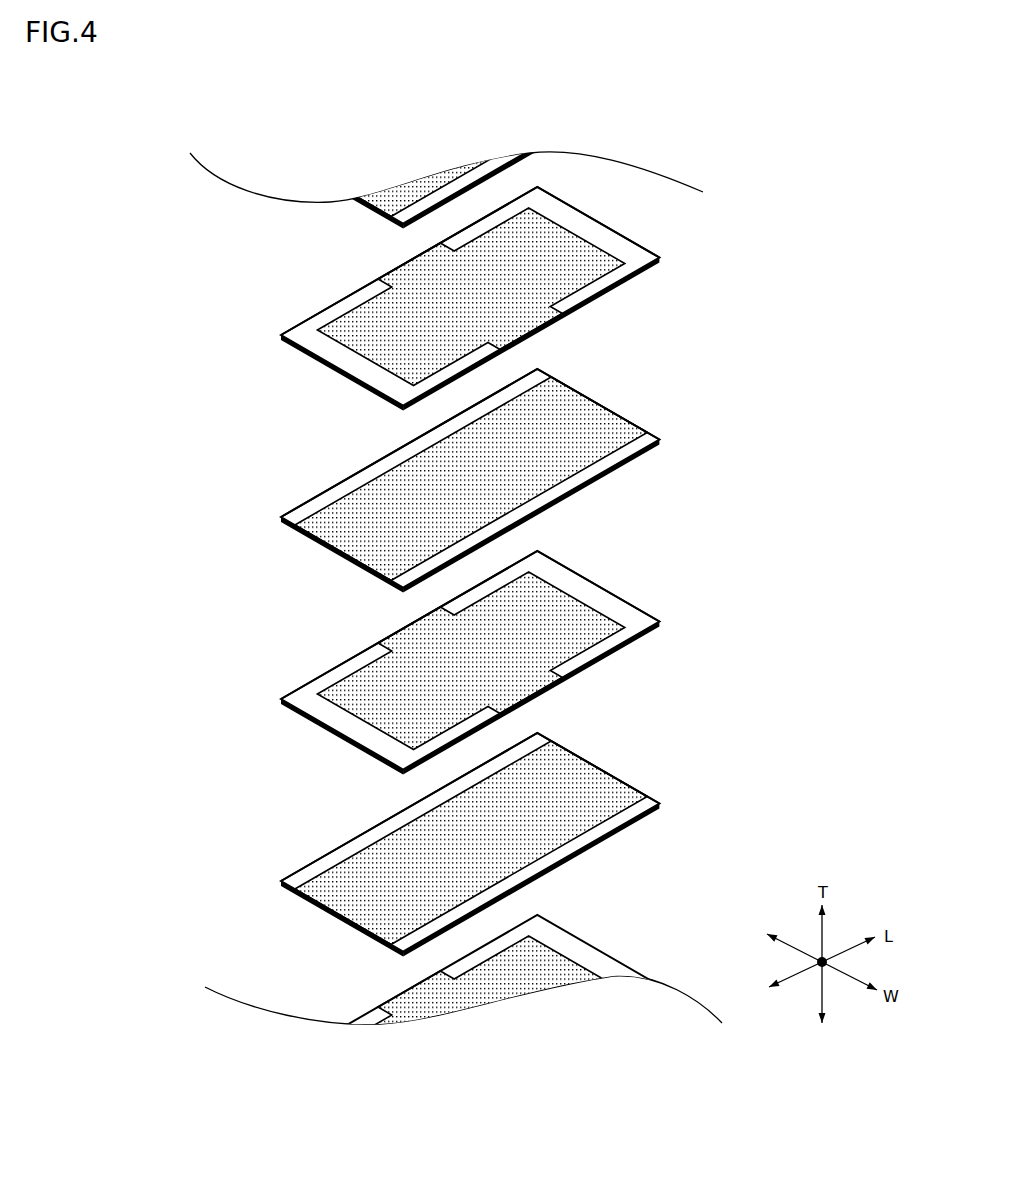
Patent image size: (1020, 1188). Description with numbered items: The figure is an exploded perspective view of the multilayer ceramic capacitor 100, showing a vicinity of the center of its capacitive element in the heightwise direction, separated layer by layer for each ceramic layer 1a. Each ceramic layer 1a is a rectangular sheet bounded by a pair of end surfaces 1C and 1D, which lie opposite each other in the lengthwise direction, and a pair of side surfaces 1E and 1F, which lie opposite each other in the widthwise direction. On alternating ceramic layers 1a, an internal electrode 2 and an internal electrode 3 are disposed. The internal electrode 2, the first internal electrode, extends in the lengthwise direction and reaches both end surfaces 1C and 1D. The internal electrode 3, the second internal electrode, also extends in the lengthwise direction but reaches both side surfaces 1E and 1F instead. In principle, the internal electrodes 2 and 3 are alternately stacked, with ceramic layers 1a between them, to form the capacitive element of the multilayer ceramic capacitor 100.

The multilayer ceramic capacitor 100 is at (141, 83).
The ceramic layer 1a is at (655, 262).
The end surface 1C is at (313, 384).
The end surface 1D is at (620, 209).
The side surface 1E is at (565, 344).
The side surface 1F is at (392, 243).
The internal electrode 2 is at (372, 320).
The internal electrode 3 is at (410, 325).